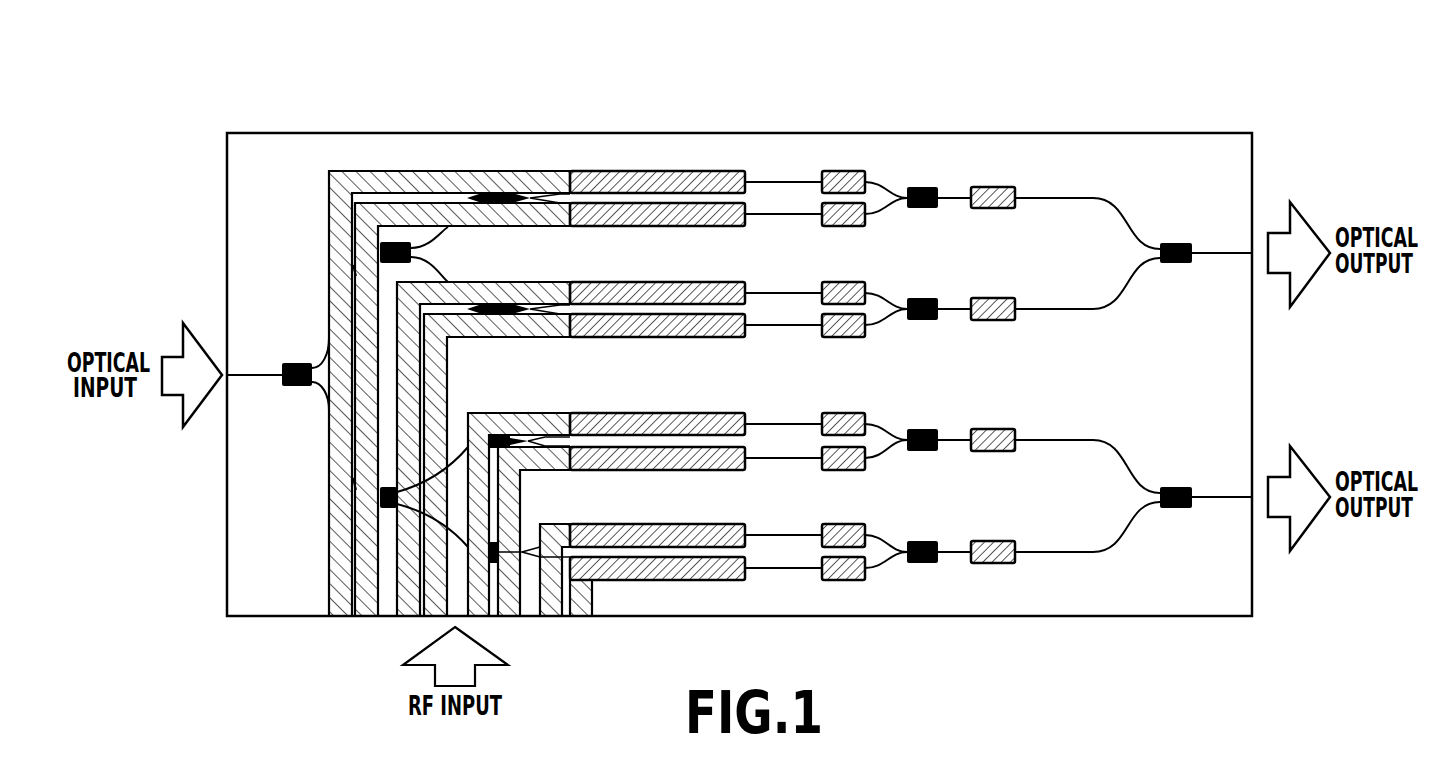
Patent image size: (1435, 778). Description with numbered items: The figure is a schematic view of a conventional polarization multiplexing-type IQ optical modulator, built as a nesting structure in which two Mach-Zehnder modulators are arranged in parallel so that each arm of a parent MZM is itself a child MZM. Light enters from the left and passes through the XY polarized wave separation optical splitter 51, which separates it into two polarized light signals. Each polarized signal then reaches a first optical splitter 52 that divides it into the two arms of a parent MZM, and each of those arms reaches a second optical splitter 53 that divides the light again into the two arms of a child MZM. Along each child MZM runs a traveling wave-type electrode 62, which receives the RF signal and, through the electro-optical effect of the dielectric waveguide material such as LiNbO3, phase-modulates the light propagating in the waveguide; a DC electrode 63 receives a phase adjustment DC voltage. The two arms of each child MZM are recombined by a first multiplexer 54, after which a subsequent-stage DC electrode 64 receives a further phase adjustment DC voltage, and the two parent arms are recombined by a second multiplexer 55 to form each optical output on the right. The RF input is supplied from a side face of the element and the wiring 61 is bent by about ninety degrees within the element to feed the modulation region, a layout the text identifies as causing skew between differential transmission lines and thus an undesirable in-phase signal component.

The XY polarized wave separation optical splitter 51 is at (295, 370).
The first optical splitter 52 is at (400, 252).
The second optical splitter 53 is at (500, 196).
The first multiplexer 54 is at (923, 198).
The second multiplexer 55 is at (1176, 255).
The RF electrode line 61 is at (345, 180).
The traveling wave-type electrode 62 is at (658, 180).
The DC electrode 63 is at (848, 180).
The DC electrode 64 is at (996, 196).